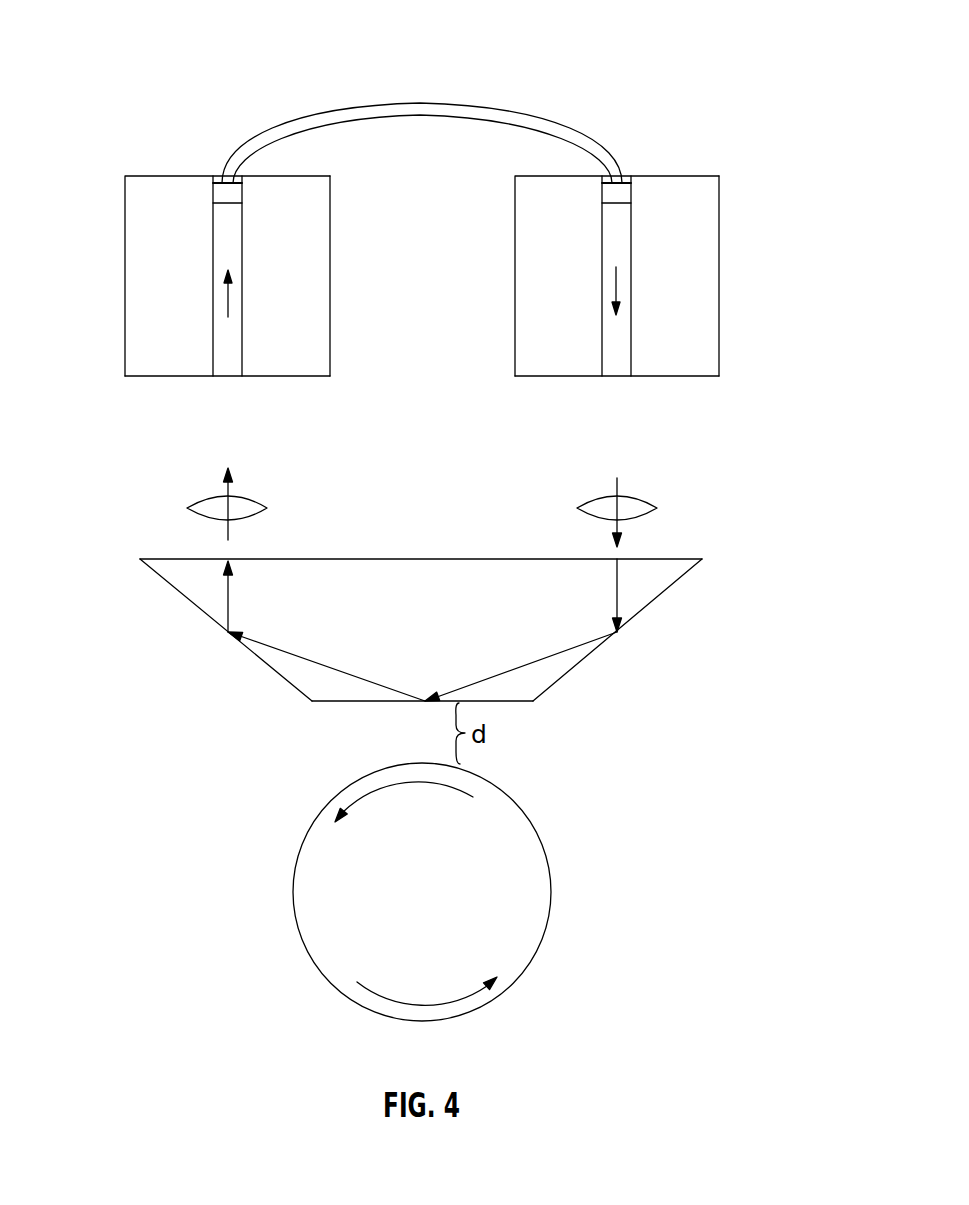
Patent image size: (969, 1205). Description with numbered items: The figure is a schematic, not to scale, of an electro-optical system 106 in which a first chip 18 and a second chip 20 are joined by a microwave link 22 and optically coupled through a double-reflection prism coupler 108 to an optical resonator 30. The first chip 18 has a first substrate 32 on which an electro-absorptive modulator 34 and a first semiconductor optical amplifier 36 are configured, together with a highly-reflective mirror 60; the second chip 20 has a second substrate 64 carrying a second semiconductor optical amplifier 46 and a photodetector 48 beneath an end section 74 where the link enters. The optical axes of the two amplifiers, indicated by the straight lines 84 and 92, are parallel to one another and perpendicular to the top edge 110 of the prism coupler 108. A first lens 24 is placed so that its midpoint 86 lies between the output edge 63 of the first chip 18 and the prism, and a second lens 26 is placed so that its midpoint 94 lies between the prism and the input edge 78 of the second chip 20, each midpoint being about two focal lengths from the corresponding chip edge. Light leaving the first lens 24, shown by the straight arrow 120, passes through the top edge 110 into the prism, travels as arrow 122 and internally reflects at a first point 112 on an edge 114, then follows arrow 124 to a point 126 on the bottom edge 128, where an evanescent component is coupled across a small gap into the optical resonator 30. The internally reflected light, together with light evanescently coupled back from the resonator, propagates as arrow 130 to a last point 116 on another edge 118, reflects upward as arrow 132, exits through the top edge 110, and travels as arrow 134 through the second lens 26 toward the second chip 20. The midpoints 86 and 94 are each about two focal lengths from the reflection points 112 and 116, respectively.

The electro-optical system 106 is at (128, 56).
The microwave link 22 is at (428, 103).
The second chip 20 is at (331, 274).
The second substrate 64 is at (318, 204).
The input edge 78 is at (305, 376).
The second semiconductor optical amplifier 46 is at (225, 367).
The second channel outlet cap 74 is at (218, 176).
The photodetector 48 is at (220, 193).
The optical axis of second SOA 92 is at (215, 302).
The first chip 18 is at (720, 265).
The first substrate 32 is at (697, 218).
The output edge 63 is at (693, 376).
The first semiconductor optical amplifier 36 is at (615, 367).
The highly-reflective mirror 60 is at (625, 172).
The electro-absorptive modulator 34 is at (622, 193).
The optical axis of first SOA 84 is at (617, 290).
The second lens 26 is at (248, 497).
The midpoint of second lens 94 is at (222, 508).
The straight arrow 134 is at (224, 485).
The first lens 24 is at (637, 497).
The midpoint of first lens 86 is at (610, 508).
The straight arrow 120 is at (613, 485).
The prism coupler 108 is at (430, 632).
The top edge 110 is at (668, 559).
The edge of prism coupler 118 is at (170, 583).
The bottom edge 128 is at (330, 703).
The edge of prism coupler 114 is at (545, 688).
The last point 116 is at (228, 636).
The first point 112 is at (618, 636).
The point on bottom edge 126 is at (420, 703).
The straight arrow 132 is at (232, 590).
The straight arrow 122 is at (612, 583).
The straight arrow 130 is at (285, 660).
The straight arrow 124 is at (563, 656).
The optical resonator 30 is at (552, 892).